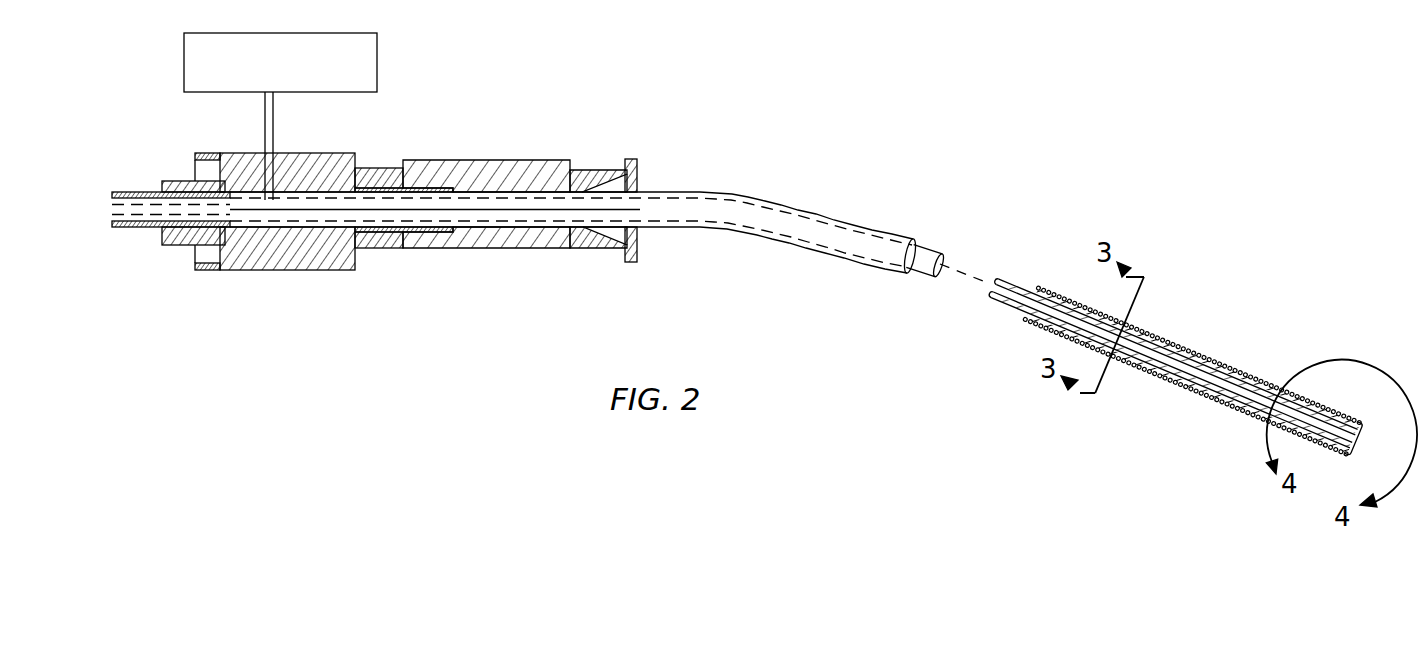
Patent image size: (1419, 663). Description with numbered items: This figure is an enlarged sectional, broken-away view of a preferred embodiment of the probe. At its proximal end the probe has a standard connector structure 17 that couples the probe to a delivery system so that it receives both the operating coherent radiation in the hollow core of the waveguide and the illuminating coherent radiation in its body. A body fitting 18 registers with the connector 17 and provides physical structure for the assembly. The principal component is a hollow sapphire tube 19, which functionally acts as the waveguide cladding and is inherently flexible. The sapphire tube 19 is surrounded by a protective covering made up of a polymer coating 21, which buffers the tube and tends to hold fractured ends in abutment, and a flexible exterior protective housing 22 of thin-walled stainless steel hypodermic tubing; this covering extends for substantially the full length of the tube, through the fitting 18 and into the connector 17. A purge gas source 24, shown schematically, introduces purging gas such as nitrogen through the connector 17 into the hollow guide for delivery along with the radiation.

The connector structure 17 is at (275, 150).
The body fitting 18 is at (472, 162).
The sapphire tube 19 is at (934, 246).
The coating 21 is at (1025, 284).
The protective housing 22 is at (831, 210).
The purge gas source 24 is at (378, 68).